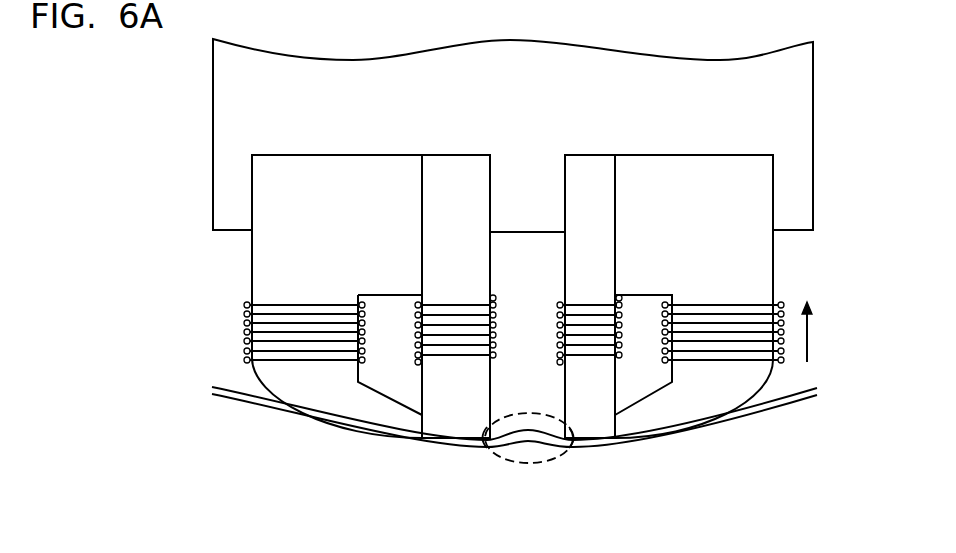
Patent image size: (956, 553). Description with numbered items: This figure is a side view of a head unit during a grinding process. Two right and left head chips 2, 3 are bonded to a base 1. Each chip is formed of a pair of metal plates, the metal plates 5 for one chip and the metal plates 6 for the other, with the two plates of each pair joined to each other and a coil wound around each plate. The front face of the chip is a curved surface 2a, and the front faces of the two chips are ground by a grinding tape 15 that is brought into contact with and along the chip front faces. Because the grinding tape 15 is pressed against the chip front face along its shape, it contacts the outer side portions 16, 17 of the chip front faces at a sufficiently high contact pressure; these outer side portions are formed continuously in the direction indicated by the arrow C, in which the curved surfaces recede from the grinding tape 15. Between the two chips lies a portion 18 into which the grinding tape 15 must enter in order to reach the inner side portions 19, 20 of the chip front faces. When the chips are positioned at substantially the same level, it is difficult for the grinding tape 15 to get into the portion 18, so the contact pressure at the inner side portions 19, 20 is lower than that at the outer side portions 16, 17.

The base 1 is at (224, 232).
The head chip 2 is at (762, 270).
The curved surface 2a is at (700, 423).
The head chip 3 is at (254, 279).
The metal plates 5 is at (590, 157).
The metal plates 6 is at (365, 157).
The grinding tape 15 is at (783, 403).
The outer side portion 16 is at (717, 421).
The outer side portion 17 is at (310, 410).
The portion between the two chips 18 is at (525, 463).
The inner side portion 19 is at (568, 450).
The inner side portion 20 is at (488, 450).
The arrow c C is at (808, 335).